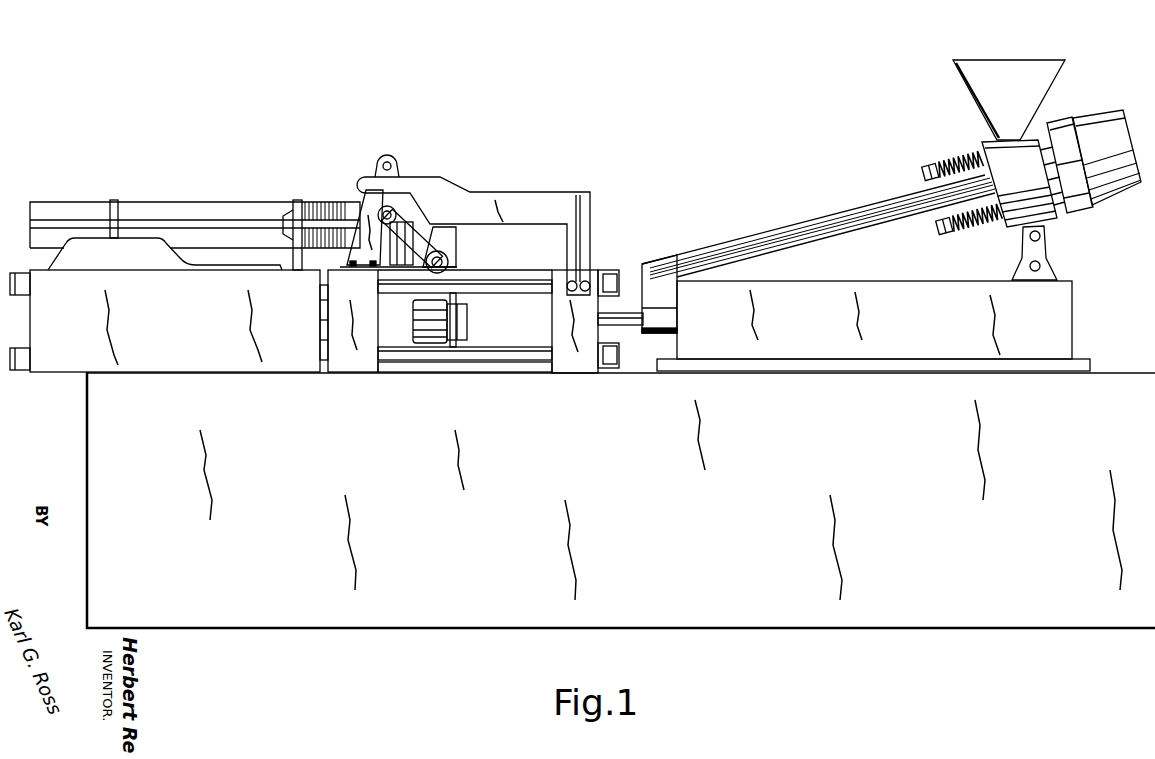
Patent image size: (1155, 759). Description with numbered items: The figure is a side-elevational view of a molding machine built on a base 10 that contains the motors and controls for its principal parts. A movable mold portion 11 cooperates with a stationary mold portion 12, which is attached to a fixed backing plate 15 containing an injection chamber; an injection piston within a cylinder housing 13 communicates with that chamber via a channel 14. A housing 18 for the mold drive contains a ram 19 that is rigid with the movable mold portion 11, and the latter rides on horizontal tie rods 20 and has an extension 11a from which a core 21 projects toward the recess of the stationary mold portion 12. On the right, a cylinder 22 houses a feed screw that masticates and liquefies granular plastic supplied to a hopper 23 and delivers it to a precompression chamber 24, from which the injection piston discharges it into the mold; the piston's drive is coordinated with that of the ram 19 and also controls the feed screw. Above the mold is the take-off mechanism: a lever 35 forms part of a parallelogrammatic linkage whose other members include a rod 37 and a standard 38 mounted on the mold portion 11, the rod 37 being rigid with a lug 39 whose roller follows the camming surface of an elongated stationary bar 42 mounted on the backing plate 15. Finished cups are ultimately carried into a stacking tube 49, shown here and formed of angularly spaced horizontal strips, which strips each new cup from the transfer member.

The base 10 is at (457, 605).
The movable mold portion 11 is at (352, 375).
The extension 11a is at (392, 365).
The stationary mold portion 12 is at (566, 380).
The cylinder housing 13 is at (1078, 310).
The channel 14 is at (630, 330).
The fixed backing plate 15 is at (605, 372).
The housing 18 is at (238, 362).
The ram 19 is at (322, 340).
The tie rods 20 is at (492, 353).
The core 21 is at (430, 378).
The cylinder 22 is at (780, 232).
The hopper 23 is at (1005, 56).
The precompression chamber 24 is at (668, 317).
The lever 35 is at (446, 238).
The rod 37 is at (415, 228).
The standard 38 is at (362, 250).
The lug 39 is at (372, 204).
The stationary bar 42 is at (497, 188).
The stacking tube 49 is at (198, 205).